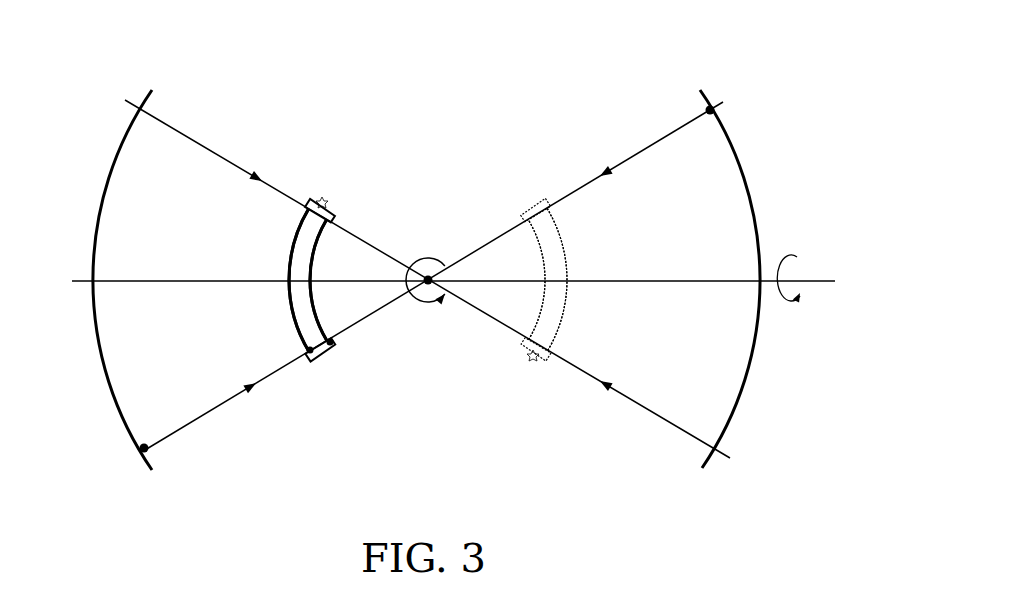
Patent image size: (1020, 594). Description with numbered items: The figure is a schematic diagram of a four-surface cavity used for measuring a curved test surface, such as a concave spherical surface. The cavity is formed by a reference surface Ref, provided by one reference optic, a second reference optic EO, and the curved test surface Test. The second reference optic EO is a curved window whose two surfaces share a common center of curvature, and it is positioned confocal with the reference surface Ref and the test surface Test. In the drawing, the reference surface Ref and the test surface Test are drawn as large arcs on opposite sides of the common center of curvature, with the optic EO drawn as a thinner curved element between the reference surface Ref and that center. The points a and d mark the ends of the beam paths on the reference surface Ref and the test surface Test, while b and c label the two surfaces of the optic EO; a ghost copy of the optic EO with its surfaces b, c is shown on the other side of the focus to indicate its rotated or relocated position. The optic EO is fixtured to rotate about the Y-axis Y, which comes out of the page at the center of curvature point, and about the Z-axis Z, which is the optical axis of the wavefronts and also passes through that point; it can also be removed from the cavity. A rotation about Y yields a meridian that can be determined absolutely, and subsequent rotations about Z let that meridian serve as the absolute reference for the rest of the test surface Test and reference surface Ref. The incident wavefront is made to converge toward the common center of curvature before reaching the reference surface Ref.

The reference surface Ref is at (142, 261).
The test surface Test is at (712, 259).
The second reference optic EO is at (428, 254).
The reference surface point a is at (141, 466).
The EO element back surface b is at (428, 277).
The EO element front surface c is at (427, 284).
The test surface point d is at (732, 120).
The Y-axis Y is at (425, 296).
The Z-axis Z is at (458, 289).